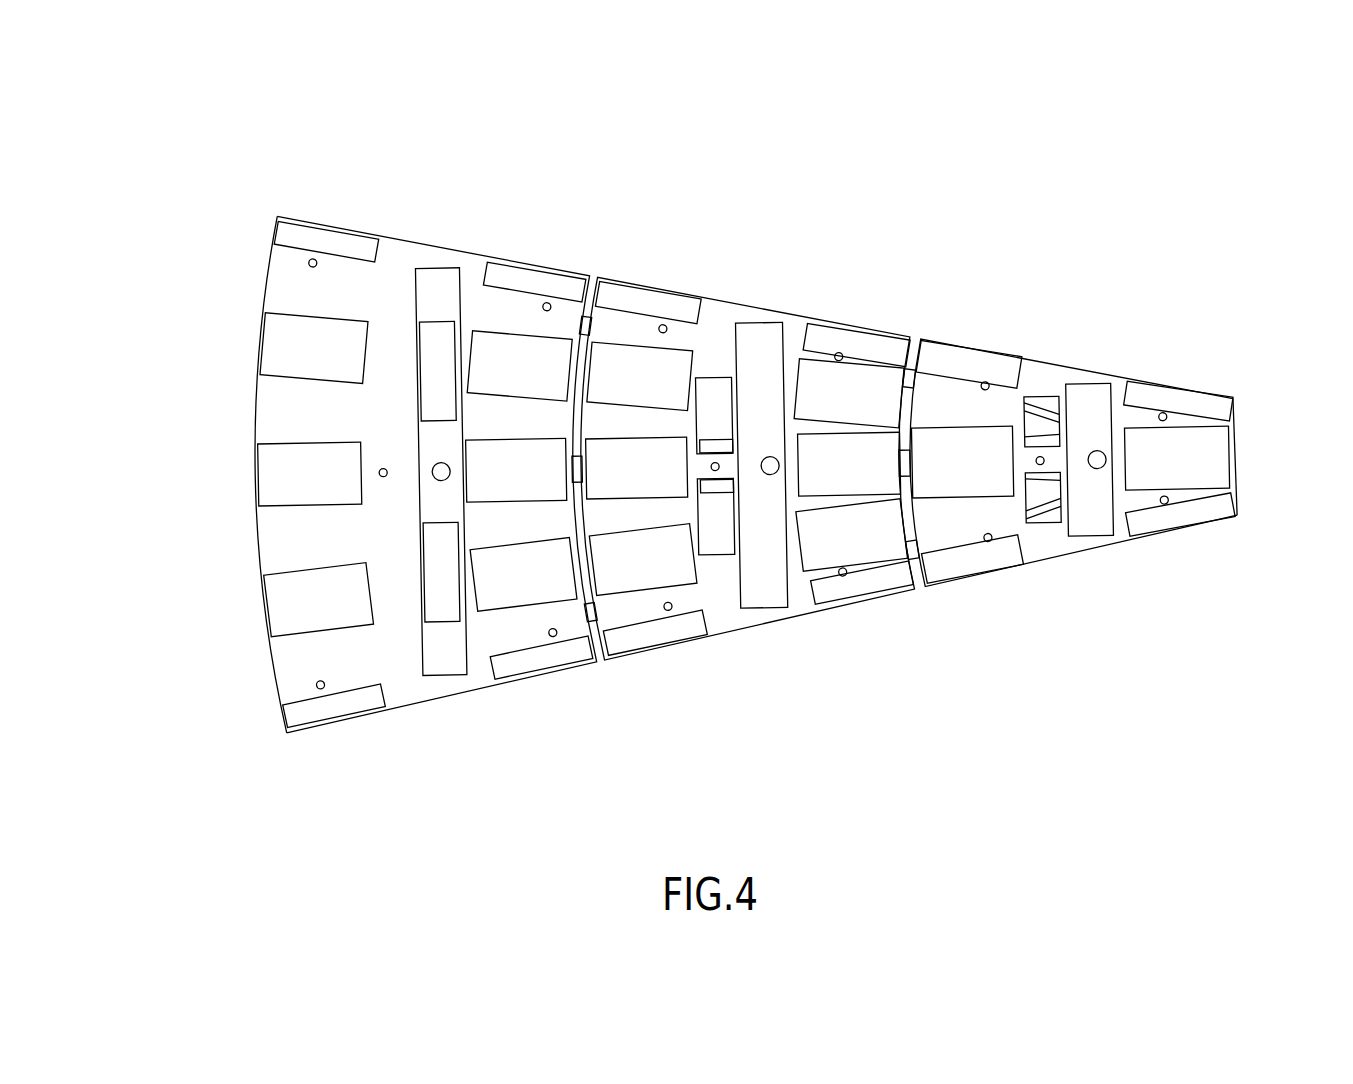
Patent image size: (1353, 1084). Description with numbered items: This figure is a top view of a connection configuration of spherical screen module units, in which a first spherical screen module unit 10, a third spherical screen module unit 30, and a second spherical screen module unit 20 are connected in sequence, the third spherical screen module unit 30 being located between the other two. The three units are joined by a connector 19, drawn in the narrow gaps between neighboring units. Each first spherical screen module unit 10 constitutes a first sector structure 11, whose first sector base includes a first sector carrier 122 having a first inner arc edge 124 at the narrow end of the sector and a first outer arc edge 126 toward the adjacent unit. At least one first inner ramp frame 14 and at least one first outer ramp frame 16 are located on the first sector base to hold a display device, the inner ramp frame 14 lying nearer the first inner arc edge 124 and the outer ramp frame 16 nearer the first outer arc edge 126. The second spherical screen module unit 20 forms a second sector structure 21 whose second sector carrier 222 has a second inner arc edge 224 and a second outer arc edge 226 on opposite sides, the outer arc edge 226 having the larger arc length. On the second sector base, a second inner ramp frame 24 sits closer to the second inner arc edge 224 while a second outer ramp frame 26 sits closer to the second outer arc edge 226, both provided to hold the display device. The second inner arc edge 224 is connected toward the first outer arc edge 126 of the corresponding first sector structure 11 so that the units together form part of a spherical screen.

The first spherical screen module unit 10 is at (1073, 376).
The first sector structure 11 is at (1119, 318).
The first inner ramp frame 14 is at (1192, 517).
The first outer ramp frame 16 is at (970, 562).
The connector 19 is at (600, 653).
The second spherical screen module unit 20 is at (352, 407).
The second sector structure 21 is at (437, 472).
The second inner ramp frame 24 is at (537, 658).
The second outer ramp frame 26 is at (337, 703).
The third spherical screen module unit 30 is at (722, 280).
The first sector carrier 122 is at (1052, 542).
The first inner arc edge 124 is at (1237, 451).
The first outer arc edge 126 is at (920, 383).
The second sector carrier 222 is at (418, 690).
The second inner arc edge 224 is at (583, 326).
The second outer arc edge 226 is at (263, 278).